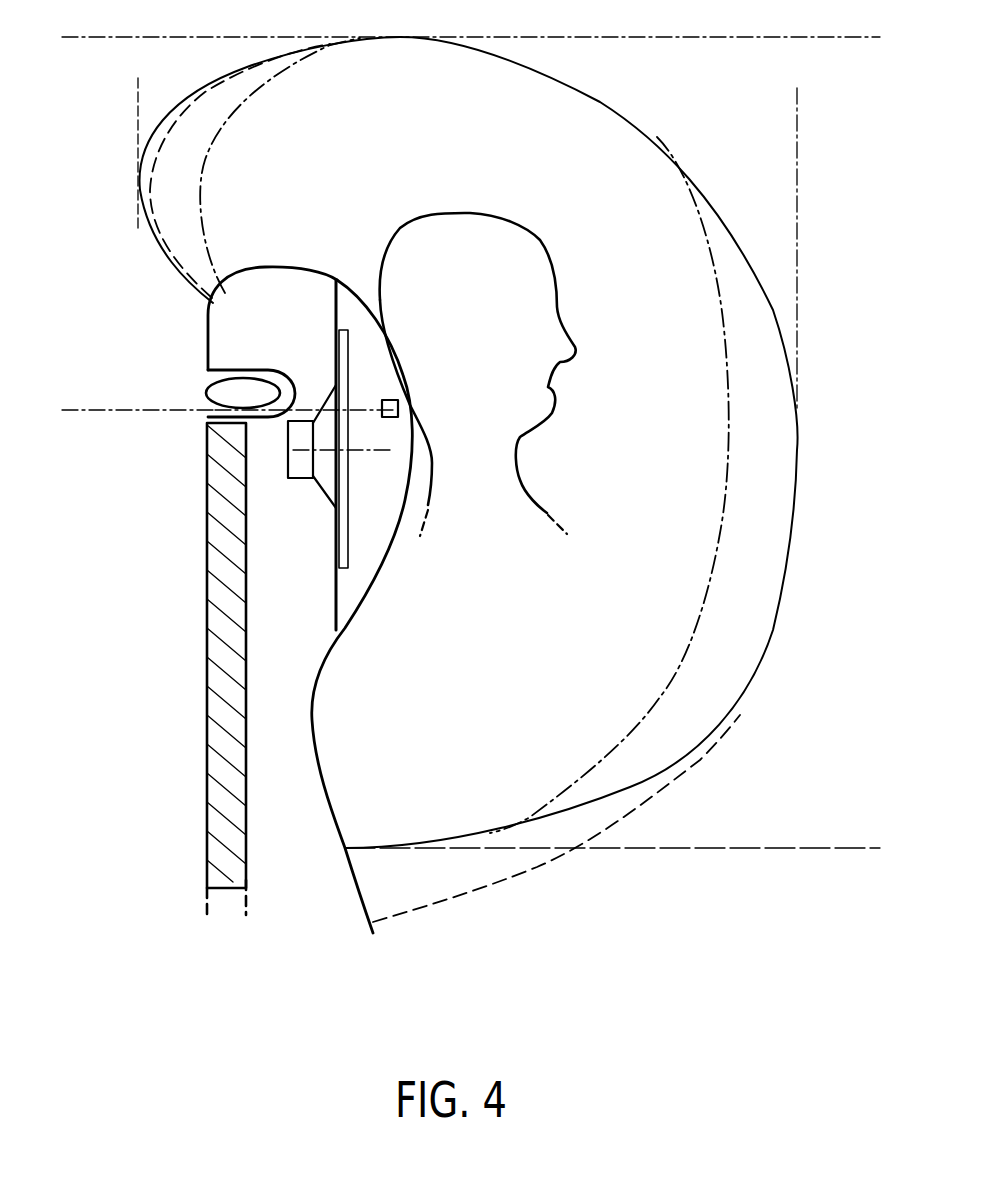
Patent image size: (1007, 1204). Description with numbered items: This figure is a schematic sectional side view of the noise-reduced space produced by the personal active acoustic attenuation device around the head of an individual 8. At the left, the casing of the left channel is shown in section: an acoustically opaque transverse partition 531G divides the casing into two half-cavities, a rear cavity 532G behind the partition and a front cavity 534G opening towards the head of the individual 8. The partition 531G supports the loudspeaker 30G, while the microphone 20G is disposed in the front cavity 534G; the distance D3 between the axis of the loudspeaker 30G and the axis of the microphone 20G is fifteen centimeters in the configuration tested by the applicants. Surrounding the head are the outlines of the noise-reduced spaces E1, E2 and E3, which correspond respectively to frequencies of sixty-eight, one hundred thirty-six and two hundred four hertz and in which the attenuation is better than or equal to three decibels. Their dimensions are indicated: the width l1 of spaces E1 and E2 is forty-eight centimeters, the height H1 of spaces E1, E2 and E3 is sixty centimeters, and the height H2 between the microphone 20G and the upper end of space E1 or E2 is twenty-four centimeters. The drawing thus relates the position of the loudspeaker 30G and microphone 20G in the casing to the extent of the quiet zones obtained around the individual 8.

The individual 8 is at (540, 238).
The microphone 20G is at (398, 406).
The loudspeaker 30G is at (300, 479).
The transverse partition 531G is at (336, 593).
The rear cavity 532G is at (302, 325).
The front cavity 534G is at (366, 315).
The distance between loudspeaker axis and microphone axis D3 is at (368, 397).
The noise-reduced space E1 is at (777, 630).
The noise-reduced space E2 is at (490, 887).
The noise-reduced space E3 is at (610, 755).
The height of spaces H1 is at (864, 37).
The height between microphone and upper end of space H2 is at (83, 37).
The width of spaces l1 is at (797, 106).